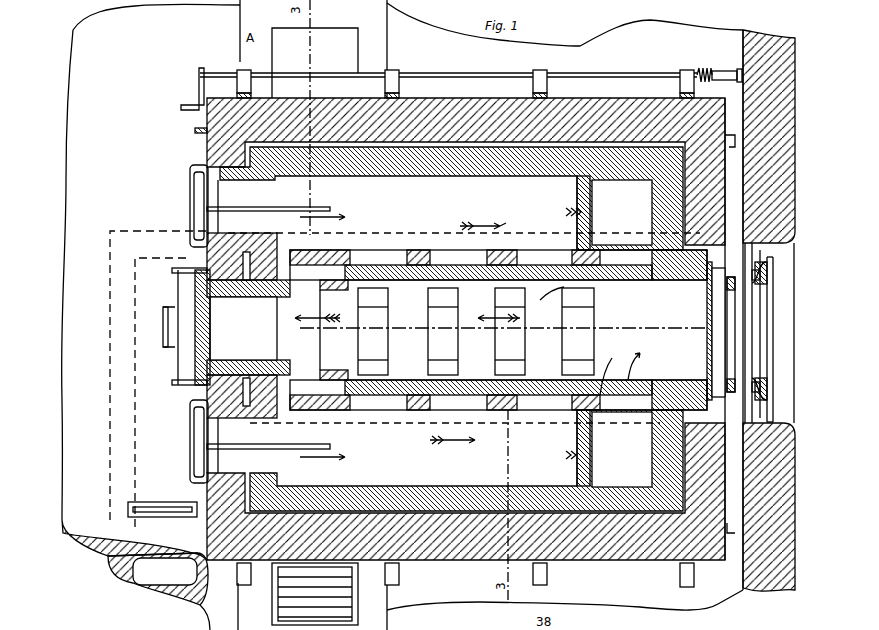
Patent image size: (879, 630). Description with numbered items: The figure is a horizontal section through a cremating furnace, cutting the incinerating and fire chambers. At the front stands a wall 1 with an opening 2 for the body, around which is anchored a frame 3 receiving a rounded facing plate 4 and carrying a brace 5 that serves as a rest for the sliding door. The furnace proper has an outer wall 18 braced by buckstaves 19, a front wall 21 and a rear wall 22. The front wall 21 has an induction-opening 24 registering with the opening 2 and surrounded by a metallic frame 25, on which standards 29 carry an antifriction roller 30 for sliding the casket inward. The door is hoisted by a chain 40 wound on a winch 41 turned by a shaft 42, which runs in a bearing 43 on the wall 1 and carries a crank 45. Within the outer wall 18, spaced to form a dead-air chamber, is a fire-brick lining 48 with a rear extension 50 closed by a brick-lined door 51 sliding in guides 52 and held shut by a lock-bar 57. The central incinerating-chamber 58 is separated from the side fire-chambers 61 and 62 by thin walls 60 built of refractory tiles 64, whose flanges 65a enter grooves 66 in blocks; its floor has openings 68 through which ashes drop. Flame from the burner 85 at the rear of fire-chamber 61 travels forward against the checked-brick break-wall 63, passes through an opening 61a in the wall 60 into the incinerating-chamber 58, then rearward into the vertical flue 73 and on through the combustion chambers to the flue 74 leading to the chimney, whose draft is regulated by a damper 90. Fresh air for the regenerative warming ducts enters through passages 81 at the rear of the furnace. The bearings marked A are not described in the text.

The wall 1 is at (796, 135).
The opening 2 is at (773, 334).
The frame 3 is at (773, 302).
The facing plate 4 is at (768, 395).
The brace 5 is at (748, 328).
The bearing A is at (768, 270).
The outer wall 18 is at (590, 110).
The buckstaves 19 is at (240, 72).
The front wall 21 is at (734, 329).
The rear wall 22 is at (190, 247).
The induction-opening 24 is at (727, 266).
The metallic frame 25 is at (720, 332).
The standards 29 is at (727, 284).
The roller 30 is at (731, 312).
The chain 40 is at (697, 75).
The winch 41 is at (727, 83).
The shaft 42 is at (223, 72).
The bearing 43 is at (742, 67).
The crank 45 is at (190, 105).
The lining 48 is at (646, 205).
The extension 50 is at (248, 325).
The rear door 51 is at (210, 322).
The guides 52 is at (190, 268).
The lock-bar 57 is at (178, 345).
The incinerating-chamber 58 is at (502, 329).
The walls 60 is at (498, 328).
The fire-chamber 61 is at (455, 444).
The opening 61a is at (620, 368).
The fire-chamber 62 is at (464, 218).
The break-wall 63 is at (577, 193).
The tiles 64 is at (526, 331).
The flange 65a is at (597, 287).
The grooves 66 is at (425, 272).
The openings 68 is at (476, 331).
The vertical flue 73 is at (312, 327).
The flue 74 is at (136, 575).
The fresh-air passages 81 is at (361, 605).
The burner 85 is at (328, 447).
The damper 90 is at (148, 502).